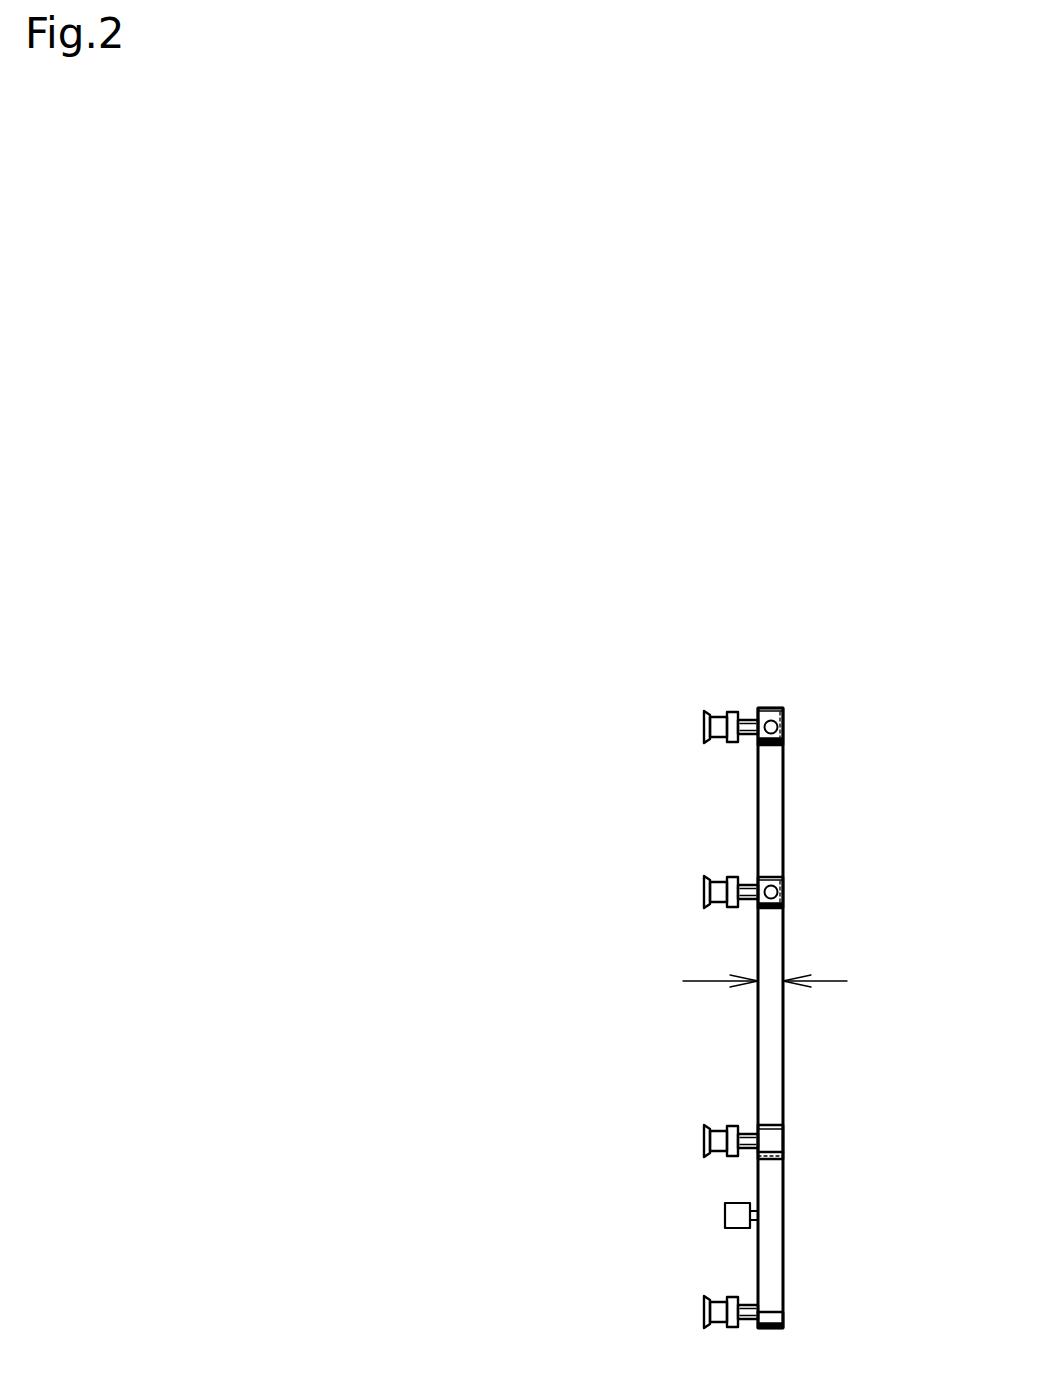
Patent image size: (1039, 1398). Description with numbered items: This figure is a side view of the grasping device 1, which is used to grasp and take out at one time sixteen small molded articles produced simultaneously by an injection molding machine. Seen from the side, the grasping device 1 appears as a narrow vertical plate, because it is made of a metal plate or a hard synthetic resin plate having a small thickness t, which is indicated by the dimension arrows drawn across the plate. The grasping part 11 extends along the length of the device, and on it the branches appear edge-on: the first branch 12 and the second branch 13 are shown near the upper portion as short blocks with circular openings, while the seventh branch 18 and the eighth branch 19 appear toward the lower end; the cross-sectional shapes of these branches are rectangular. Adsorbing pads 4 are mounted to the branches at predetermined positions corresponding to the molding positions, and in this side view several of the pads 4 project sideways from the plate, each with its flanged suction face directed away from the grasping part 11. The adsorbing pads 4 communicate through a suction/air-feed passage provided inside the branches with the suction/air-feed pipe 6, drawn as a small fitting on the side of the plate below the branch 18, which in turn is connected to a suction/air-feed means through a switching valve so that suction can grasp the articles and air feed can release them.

The grasping device 1 is at (792, 812).
The adsorbing pads 4 is at (703, 727).
The suction/air-feed pipe 6 is at (724, 1216).
The grasping part 11 is at (787, 852).
The first branch 12 is at (776, 708).
The second branch 13 is at (772, 877).
The seventh branch 18 is at (769, 1123).
The eighth branch 19 is at (765, 1283).
The thickness t is at (769, 978).